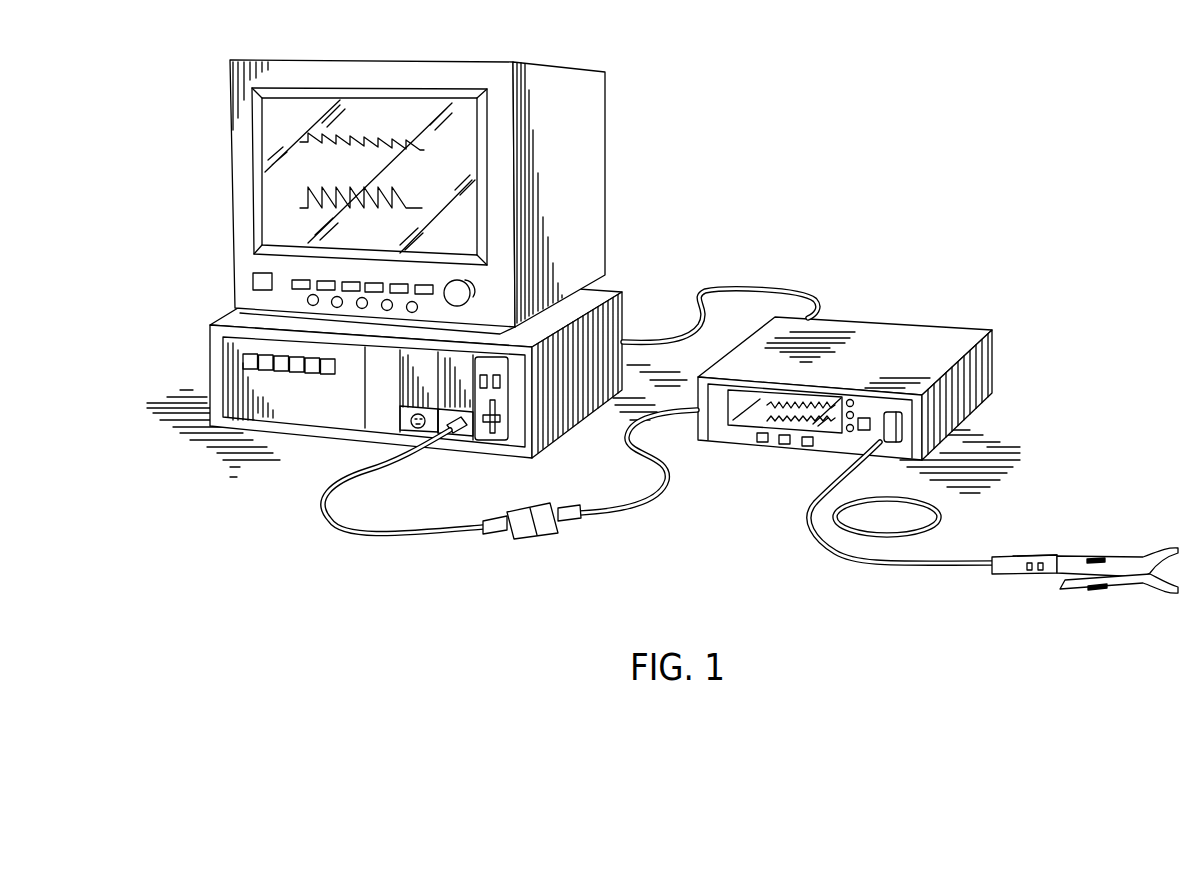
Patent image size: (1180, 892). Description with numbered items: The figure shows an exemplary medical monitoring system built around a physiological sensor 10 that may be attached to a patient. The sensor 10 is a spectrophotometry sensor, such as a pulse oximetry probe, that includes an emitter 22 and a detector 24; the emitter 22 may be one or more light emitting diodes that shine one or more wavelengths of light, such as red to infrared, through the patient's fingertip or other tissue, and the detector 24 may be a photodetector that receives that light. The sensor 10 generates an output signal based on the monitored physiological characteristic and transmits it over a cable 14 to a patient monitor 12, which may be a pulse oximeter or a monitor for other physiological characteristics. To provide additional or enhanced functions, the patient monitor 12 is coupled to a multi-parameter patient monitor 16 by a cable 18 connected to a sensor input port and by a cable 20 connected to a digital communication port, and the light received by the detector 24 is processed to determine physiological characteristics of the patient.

The physiological sensor 10 is at (1132, 592).
The patient monitor 12 is at (907, 325).
The cable 14 is at (838, 552).
The multi-parameter patient monitor 16 is at (562, 70).
The cable 18 is at (617, 515).
The cable 20 is at (763, 290).
The emitter 22 is at (1096, 554).
The detector 24 is at (1099, 594).